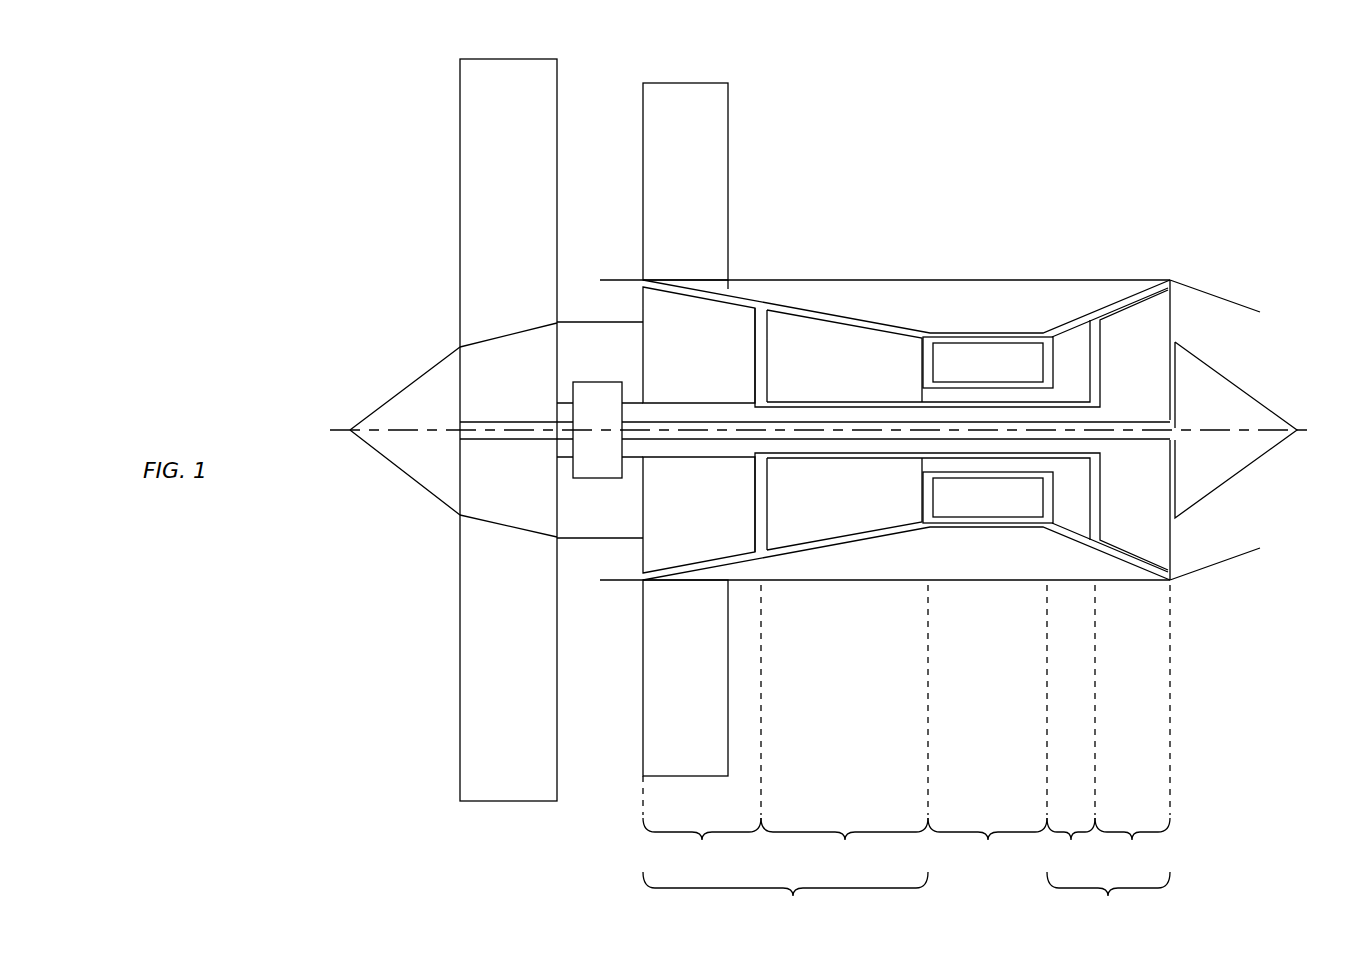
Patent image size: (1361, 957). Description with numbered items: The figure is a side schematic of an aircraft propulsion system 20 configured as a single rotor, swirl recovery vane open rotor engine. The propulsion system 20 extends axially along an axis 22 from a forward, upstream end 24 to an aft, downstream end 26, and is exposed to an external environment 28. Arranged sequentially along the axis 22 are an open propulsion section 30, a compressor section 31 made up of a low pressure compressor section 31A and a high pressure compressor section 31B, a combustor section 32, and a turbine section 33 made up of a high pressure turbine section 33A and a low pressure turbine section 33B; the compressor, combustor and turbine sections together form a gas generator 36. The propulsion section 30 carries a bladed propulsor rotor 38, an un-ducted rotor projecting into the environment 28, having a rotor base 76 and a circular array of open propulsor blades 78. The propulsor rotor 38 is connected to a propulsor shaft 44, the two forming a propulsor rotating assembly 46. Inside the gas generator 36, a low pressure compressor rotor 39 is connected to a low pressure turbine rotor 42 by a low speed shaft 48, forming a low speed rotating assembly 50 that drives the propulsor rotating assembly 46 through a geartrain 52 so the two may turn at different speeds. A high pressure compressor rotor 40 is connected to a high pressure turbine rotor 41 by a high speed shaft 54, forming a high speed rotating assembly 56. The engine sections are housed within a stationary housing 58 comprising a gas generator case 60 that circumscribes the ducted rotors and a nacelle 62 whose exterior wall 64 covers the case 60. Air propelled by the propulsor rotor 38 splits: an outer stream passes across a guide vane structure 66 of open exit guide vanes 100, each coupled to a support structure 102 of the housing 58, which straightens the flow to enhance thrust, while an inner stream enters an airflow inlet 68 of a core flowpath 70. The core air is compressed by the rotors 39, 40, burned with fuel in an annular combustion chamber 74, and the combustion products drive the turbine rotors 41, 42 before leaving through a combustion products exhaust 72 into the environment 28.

The aircraft propulsion system 20 is at (318, 88).
The axis 22 is at (1305, 440).
The forward, upstream end 24 is at (348, 433).
The aft, downstream end 26 is at (1298, 428).
The external environment 28 is at (336, 239).
The open propulsion section 30 is at (640, 58).
The compressor section 31 is at (785, 899).
The low pressure compressor (LPC) section 31A is at (702, 728).
The high pressure compressor (HPC) section 31B is at (844, 728).
The combustor section 32 is at (987, 728).
The turbine section 33 is at (1108, 899).
The high pressure turbine (HPT) section 33A is at (1071, 728).
The low pressure turbine (LPT) section 33B is at (1132, 728).
The gas generator 36 is at (933, 292).
The propulsor rotor 38 is at (458, 370).
The low pressure compressor (LPC) rotor 39 is at (678, 376).
The high pressure compressor (HPC) rotor 40 is at (810, 371).
The high pressure turbine (HPT) rotor 41 is at (1058, 379).
The low pressure turbine (LPT) rotor 42 is at (1123, 374).
The propulsor shaft 44 is at (563, 403).
The propulsor rotating assembly 46 is at (438, 400).
The low speed shaft 48 is at (873, 417).
The low speed rotating assembly 50 is at (630, 496).
The geartrain 52 is at (584, 436).
The high speed shaft 54 is at (953, 395).
The high speed rotating assembly 56 is at (755, 492).
The stationary housing 58 is at (1049, 270).
The gas generator case 60 is at (833, 300).
The nacelle 62 is at (814, 272).
The exterior wall 64 is at (783, 280).
The guide vane structure 66 is at (750, 98).
The airflow inlet 68 is at (597, 303).
The core flowpath 70 is at (610, 312).
The combustion products exhaust 72 is at (1260, 353).
The combustion chamber 74 is at (976, 372).
The propulsor rotor base 76 is at (491, 377).
The propulsor blades 78 is at (491, 214).
The exit guide vanes 100 is at (670, 204).
The support structure 102 is at (735, 290).